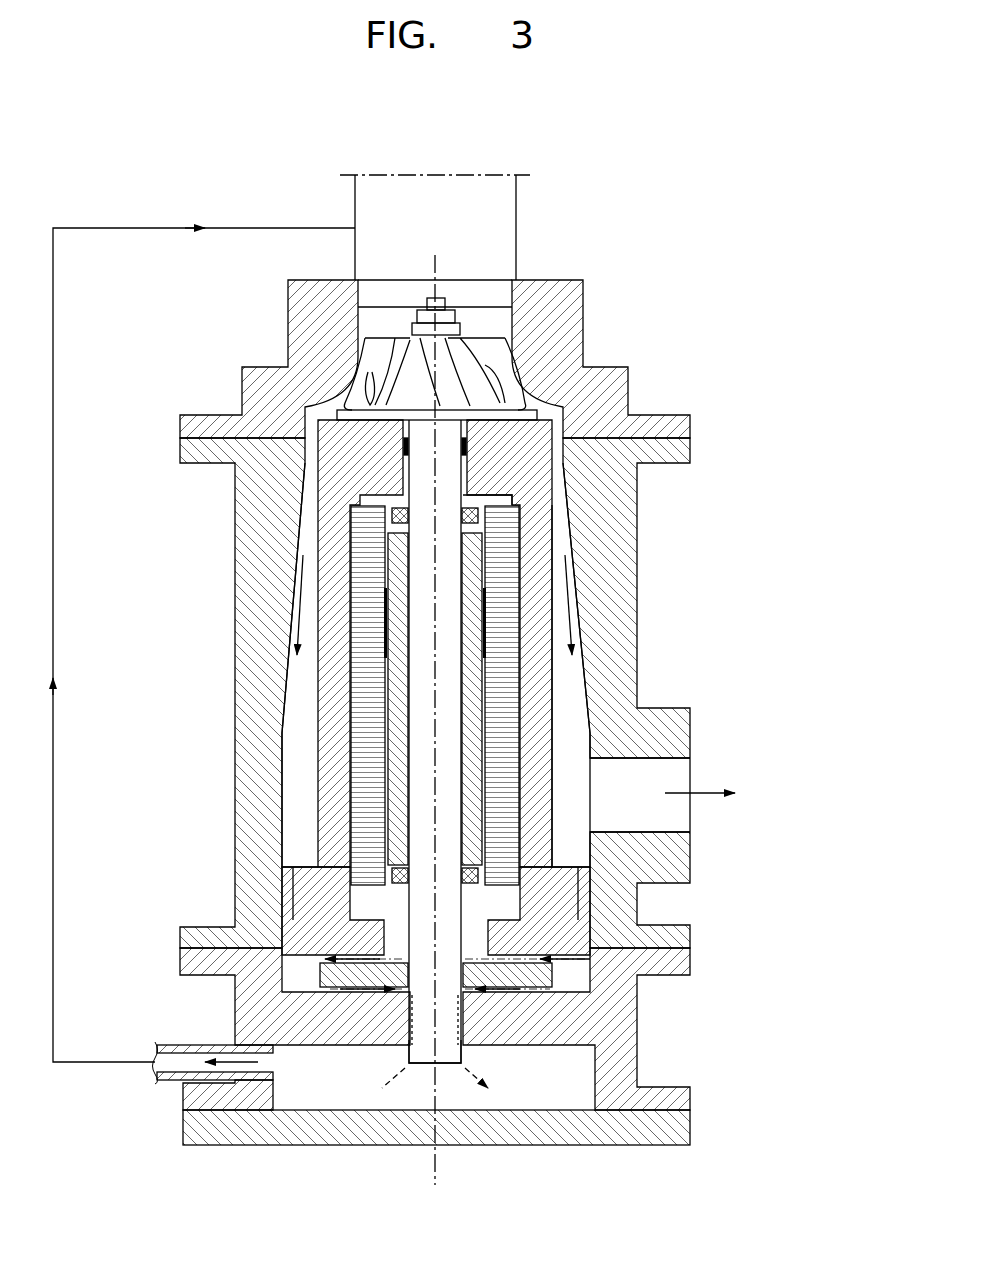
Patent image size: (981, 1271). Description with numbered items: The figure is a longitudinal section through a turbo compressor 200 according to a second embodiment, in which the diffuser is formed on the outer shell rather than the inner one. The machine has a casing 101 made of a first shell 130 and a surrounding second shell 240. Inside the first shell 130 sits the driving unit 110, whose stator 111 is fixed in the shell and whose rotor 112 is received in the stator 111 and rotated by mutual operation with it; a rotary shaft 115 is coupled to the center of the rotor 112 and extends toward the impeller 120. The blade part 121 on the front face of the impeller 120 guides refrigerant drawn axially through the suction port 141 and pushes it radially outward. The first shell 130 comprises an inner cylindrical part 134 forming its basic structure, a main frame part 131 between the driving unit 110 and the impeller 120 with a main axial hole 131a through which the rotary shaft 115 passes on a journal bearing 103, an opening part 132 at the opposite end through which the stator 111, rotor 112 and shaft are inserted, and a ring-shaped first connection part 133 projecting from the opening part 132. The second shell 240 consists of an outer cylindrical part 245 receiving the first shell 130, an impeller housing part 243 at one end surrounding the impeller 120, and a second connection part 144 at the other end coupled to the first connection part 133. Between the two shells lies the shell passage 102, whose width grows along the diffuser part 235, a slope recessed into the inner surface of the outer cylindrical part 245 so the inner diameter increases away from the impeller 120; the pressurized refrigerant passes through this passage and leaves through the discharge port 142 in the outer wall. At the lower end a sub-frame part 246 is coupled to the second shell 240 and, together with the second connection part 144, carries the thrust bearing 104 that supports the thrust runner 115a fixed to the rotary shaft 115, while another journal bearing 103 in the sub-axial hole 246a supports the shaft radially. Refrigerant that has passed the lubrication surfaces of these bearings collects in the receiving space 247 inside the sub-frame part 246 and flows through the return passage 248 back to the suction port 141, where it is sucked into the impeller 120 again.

The turbo compressor 200 is at (632, 255).
The impeller housing part 243 is at (548, 285).
The suction port 141 is at (389, 326).
The blade part 121 is at (486, 358).
The impeller 120 is at (516, 357).
The main frame part 131 is at (500, 450).
The main axial hole 131a is at (470, 500).
The journal bearing 103 is at (407, 462).
The shell passage 102 is at (304, 539).
The diffuser part 235 is at (580, 583).
The outer cylindrical part 245 is at (628, 650).
The inner cylindrical part 134 is at (553, 683).
The return passage 248 is at (53, 374).
The second shell 240 is at (228, 676).
The casing 101 is at (203, 693).
The first shell 130 is at (308, 742).
The discharge port 142 is at (662, 811).
The stator 111 is at (355, 790).
The driving unit 110 is at (308, 741).
The rotor 112 is at (382, 822).
The rotary shaft 115 is at (418, 852).
The first connection part 133 is at (300, 900).
The opening part 132 is at (498, 901).
The second connection part 144 is at (303, 950).
The thrust bearing 104 is at (552, 988).
The sub-frame part 246 is at (630, 1032).
The receiving space 247 is at (301, 1089).
The thrust runner 115a is at (350, 975).
The sub-axial hole 246a is at (406, 1025).